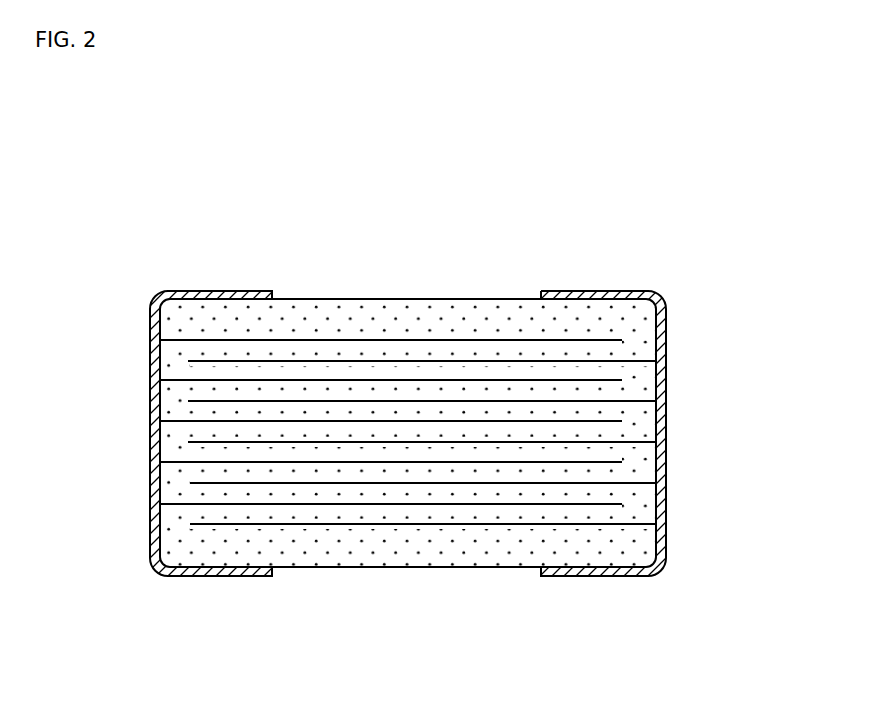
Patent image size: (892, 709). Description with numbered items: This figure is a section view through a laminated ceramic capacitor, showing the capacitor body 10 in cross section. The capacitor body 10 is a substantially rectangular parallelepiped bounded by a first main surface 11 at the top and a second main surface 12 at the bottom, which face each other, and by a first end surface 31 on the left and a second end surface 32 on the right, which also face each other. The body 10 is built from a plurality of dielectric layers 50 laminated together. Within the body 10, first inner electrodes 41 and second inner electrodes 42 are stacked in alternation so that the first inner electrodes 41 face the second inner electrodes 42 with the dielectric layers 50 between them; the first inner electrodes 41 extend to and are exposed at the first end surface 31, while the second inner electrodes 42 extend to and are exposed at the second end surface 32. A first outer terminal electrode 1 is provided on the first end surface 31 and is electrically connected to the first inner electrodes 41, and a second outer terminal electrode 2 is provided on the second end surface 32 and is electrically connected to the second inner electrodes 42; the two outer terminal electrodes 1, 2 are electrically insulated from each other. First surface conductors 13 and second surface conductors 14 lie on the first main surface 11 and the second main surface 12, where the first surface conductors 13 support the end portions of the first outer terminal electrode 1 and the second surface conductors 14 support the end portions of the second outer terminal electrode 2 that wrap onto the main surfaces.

The first outer terminal electrode 1 is at (217, 291).
The second outer terminal electrode 2 is at (603, 292).
The capacitor body 10 is at (493, 297).
The first main surface 11 is at (397, 298).
The second main surface 12 is at (390, 567).
The first surface conductors 13 is at (232, 293).
The second surface conductors 14 is at (580, 298).
The first end surface 31 is at (152, 488).
The second end surface 32 is at (665, 502).
The first inner electrodes 41 is at (182, 420).
The second inner electrodes 42 is at (622, 440).
The dielectric layers 50 is at (237, 433).